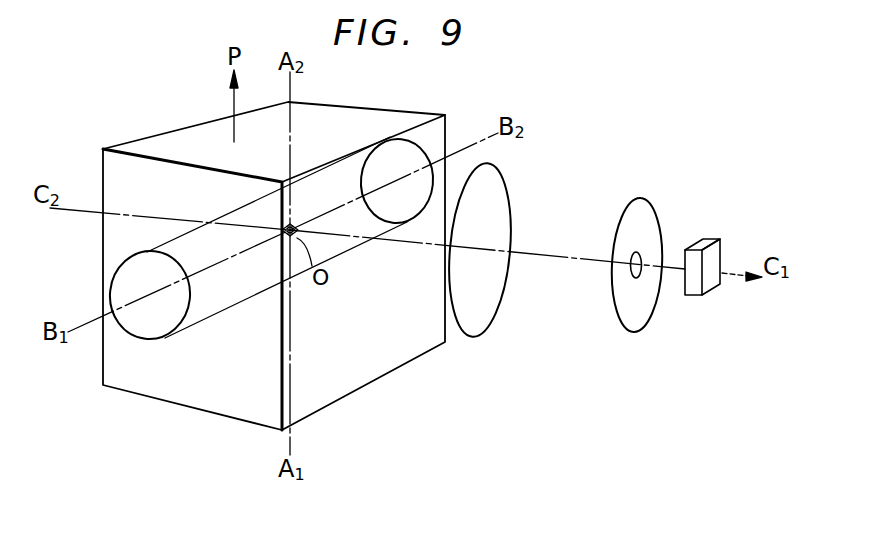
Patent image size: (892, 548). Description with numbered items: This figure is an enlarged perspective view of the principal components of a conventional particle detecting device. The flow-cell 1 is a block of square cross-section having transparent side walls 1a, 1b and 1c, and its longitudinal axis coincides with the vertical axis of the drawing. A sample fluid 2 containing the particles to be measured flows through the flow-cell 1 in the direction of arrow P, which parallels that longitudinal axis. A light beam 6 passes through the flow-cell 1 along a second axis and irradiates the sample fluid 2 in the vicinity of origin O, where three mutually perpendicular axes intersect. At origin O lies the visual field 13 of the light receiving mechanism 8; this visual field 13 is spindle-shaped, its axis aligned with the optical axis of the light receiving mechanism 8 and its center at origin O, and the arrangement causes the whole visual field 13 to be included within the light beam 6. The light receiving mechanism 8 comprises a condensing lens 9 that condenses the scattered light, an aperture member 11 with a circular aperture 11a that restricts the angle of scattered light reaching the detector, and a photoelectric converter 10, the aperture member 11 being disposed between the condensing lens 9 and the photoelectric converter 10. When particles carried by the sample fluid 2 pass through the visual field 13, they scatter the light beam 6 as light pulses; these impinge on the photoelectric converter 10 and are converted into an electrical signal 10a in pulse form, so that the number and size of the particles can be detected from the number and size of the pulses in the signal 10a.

The flow-cell 1 is at (274, 258).
The transparent side wall 1a is at (223, 406).
The transparent side wall 1b is at (318, 125).
The transparent side wall 1c is at (365, 378).
The sample fluid 2 is at (233, 102).
The light beam 6 is at (150, 343).
The light receiving mechanism 8 is at (594, 195).
The condensing lens 9 is at (500, 208).
The photoelectric converter 10 is at (733, 245).
The electrical signal 10a is at (722, 276).
The aperture member 11 is at (641, 212).
The circular aperture 11a is at (631, 273).
The visual field 13 is at (277, 232).